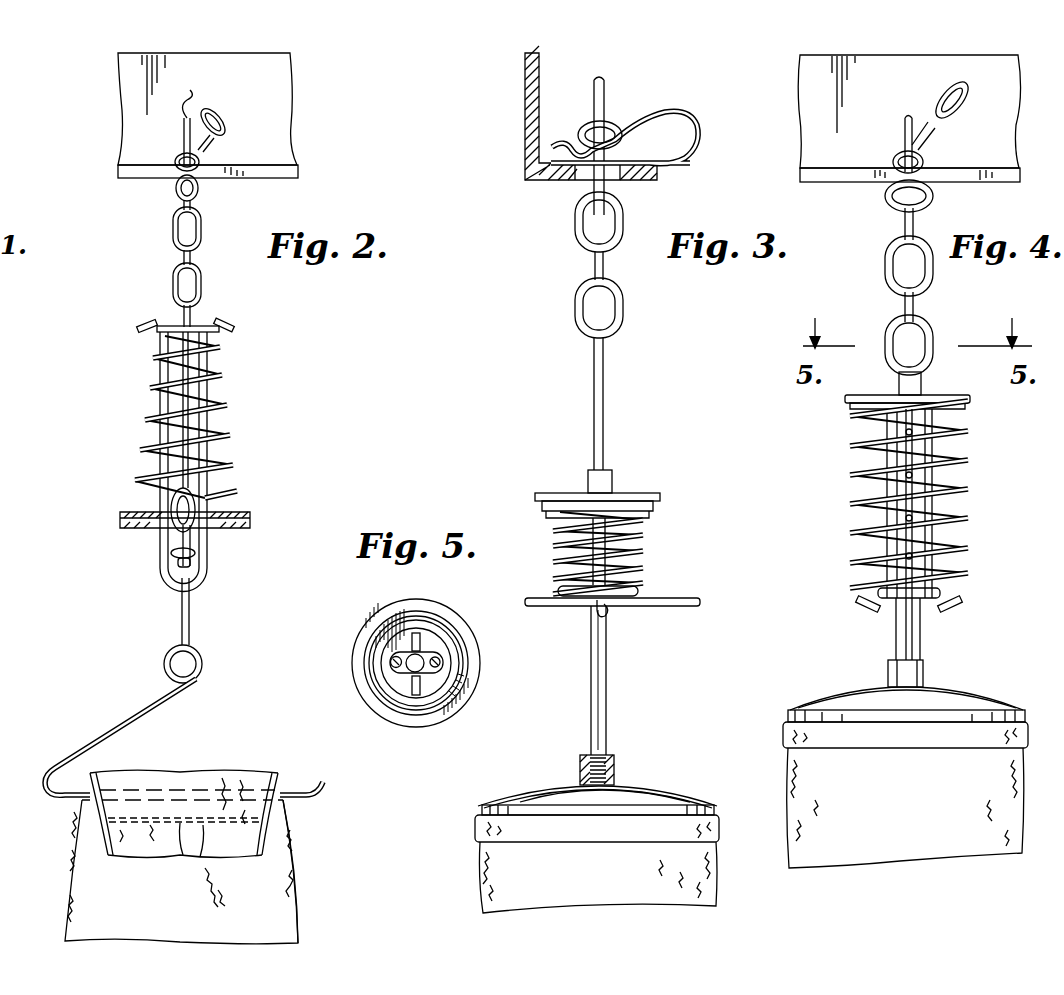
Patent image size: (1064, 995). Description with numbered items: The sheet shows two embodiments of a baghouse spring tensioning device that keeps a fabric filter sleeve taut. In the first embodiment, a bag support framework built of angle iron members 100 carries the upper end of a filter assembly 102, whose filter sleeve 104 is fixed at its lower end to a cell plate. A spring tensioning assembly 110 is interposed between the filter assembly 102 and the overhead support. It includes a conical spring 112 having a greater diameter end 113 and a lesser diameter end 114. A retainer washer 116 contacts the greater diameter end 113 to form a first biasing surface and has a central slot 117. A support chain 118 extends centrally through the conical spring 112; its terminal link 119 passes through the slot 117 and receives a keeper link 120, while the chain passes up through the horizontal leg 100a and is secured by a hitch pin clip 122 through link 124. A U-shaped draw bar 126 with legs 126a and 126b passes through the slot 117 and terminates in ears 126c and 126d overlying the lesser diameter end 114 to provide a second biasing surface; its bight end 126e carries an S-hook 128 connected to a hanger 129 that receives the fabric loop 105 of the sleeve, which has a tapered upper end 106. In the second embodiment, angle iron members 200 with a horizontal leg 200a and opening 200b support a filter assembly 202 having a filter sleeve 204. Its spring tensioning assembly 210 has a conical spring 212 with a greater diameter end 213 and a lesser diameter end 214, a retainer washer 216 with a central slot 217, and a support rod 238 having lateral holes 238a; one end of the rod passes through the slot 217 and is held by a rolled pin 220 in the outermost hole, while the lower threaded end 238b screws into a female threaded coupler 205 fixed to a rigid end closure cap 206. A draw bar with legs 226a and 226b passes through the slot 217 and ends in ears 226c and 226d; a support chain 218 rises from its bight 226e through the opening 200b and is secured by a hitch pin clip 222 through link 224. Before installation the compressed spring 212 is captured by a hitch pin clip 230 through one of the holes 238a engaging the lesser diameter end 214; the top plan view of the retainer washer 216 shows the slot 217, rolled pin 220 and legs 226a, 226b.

In FIG. 2, the angle iron member 100 is at (299, 89).
In FIG. 2, the horizontal leg 100a is at (300, 172).
In FIG. 2, the filter assembly 102 is at (184, 722).
In FIG. 2, the filter sleeve 104 is at (179, 843).
In FIG. 2, the fabric loop 105 is at (222, 774).
In FIG. 2, the tapered upper end 106 is at (292, 838).
In FIG. 2, the spring tensioning assembly 110 is at (212, 448).
In FIG. 2, the conical spring 112 is at (230, 437).
In FIG. 2, the greater diameter end 113 is at (206, 531).
In FIG. 2, the lesser diameter end 114 is at (220, 334).
In FIG. 2, the retainer washer 116 is at (250, 526).
In FIG. 2, the central slot 117 is at (153, 527).
In FIG. 2, the support chain 118 is at (173, 279).
In FIG. 2, the terminal link 119 is at (173, 505).
In FIG. 2, the keeper link 120 is at (190, 542).
In FIG. 2, the hitch pin clip 122 is at (190, 116).
In FIG. 2, the link 124 is at (179, 159).
In FIG. 2, the draw bar 126 is at (185, 465).
In FIG. 2, the leg 126a is at (162, 432).
In FIG. 2, the leg 126b is at (212, 427).
In FIG. 2, the ear 126c is at (142, 325).
In FIG. 2, the ear 126d is at (224, 322).
In FIG. 2, the bight end 126e is at (172, 583).
In FIG. 2, the S-hook 128 is at (182, 620).
In FIG. 2, the hanger 129 is at (130, 723).
In FIG. 3, the angle iron member 200 is at (592, 130).
In FIG. 4, the angle iron member 200 is at (795, 84).
In FIG. 3, the horizontal leg 200a is at (660, 172).
In FIG. 4, the horizontal leg 200a is at (1016, 172).
In FIG. 3, the opening 200b is at (580, 181).
In FIG. 3, the filter assembly 202 is at (620, 813).
In FIG. 4, the filter assembly 202 is at (909, 764).
In FIG. 3, the filter sleeve 204 is at (716, 892).
In FIG. 4, the filter sleeve 204 is at (969, 845).
In FIG. 3, the female threaded coupler 205 is at (615, 770).
In FIG. 4, the female threaded coupler 205 is at (924, 672).
In FIG. 3, the end closure cap 206 is at (701, 806).
In FIG. 4, the end closure cap 206 is at (848, 698).
In FIG. 3, the spring tensioning assembly 210 is at (617, 560).
In FIG. 4, the spring tensioning assembly 210 is at (903, 502).
In FIG. 3, the conical spring 212 is at (638, 545).
In FIG. 4, the conical spring 212 is at (948, 547).
In FIG. 3, the greater diameter end 213 is at (655, 504).
In FIG. 4, the greater diameter end 213 is at (851, 406).
In FIG. 3, the lesser diameter end 214 is at (636, 591).
In FIG. 4, the lesser diameter end 214 is at (880, 596).
In FIG. 3, the retainer washer 216 is at (651, 493).
In FIG. 5, the retainer washer 216 is at (463, 697).
In FIG. 4, the retainer washer 216 is at (962, 395).
In FIG. 5, the central slot 217 is at (402, 670).
In FIG. 3, the support chain 218 is at (577, 305).
In FIG. 4, the support chain 218 is at (929, 284).
In FIG. 5, the rolled pin 220 is at (420, 640).
In FIG. 3, the hitch pin clip 222 is at (692, 123).
In FIG. 4, the hitch pin clip 222 is at (905, 131).
In FIG. 3, the link 224 is at (614, 194).
In FIG. 4, the link 224 is at (886, 194).
In FIG. 3, the leg 226a is at (605, 423).
In FIG. 5, the leg 226a is at (394, 664).
In FIG. 4, the leg 226a is at (888, 503).
In FIG. 5, the leg 226b is at (440, 664).
In FIG. 4, the leg 226b is at (934, 522).
In FIG. 3, the ear 226c is at (608, 615).
In FIG. 4, the ear 226c is at (876, 606).
In FIG. 4, the ear 226d is at (950, 607).
In FIG. 3, the bight 226e is at (604, 350).
In FIG. 4, the bight 226e is at (904, 336).
In FIG. 3, the hitch pin clip 230 is at (690, 607).
In FIG. 3, the support rod 238 is at (607, 655).
In FIG. 5, the support rod 238 is at (424, 660).
In FIG. 4, the support rod 238 is at (921, 628).
In FIG. 4, the lateral holes 238a is at (915, 495).
In FIG. 3, the lower threaded end 238b is at (606, 759).
In FIG. 4, the lower threaded end 238b is at (897, 665).